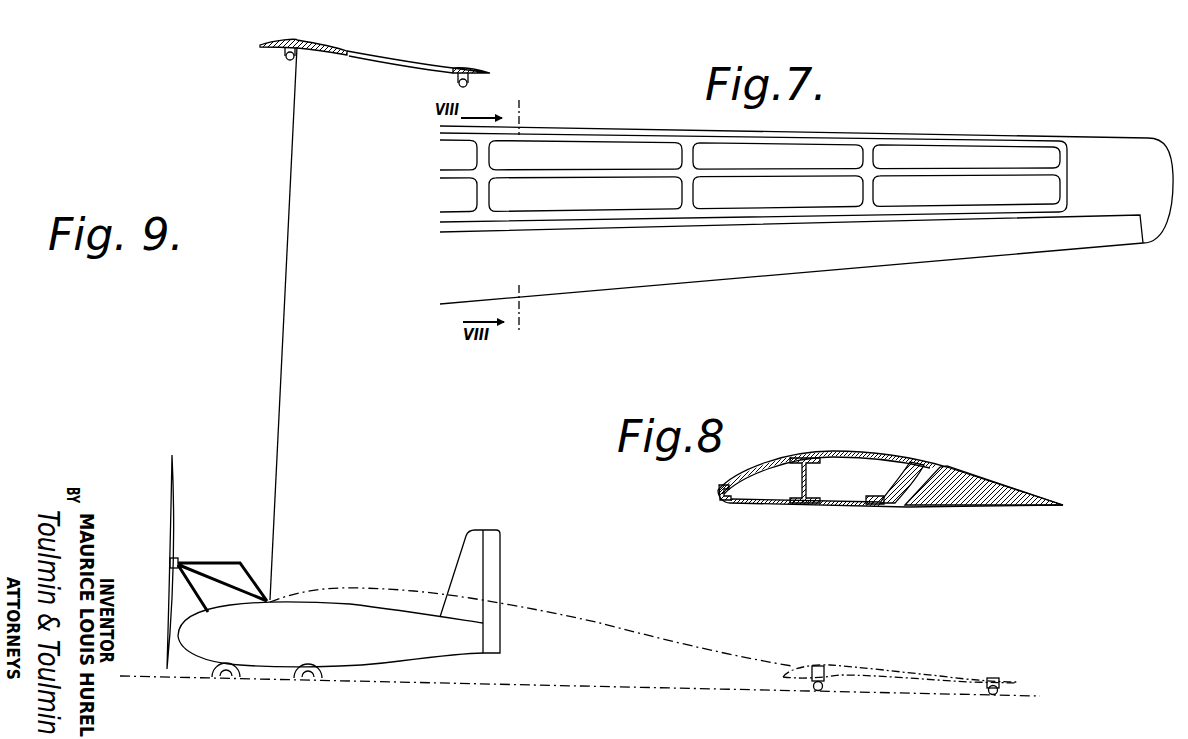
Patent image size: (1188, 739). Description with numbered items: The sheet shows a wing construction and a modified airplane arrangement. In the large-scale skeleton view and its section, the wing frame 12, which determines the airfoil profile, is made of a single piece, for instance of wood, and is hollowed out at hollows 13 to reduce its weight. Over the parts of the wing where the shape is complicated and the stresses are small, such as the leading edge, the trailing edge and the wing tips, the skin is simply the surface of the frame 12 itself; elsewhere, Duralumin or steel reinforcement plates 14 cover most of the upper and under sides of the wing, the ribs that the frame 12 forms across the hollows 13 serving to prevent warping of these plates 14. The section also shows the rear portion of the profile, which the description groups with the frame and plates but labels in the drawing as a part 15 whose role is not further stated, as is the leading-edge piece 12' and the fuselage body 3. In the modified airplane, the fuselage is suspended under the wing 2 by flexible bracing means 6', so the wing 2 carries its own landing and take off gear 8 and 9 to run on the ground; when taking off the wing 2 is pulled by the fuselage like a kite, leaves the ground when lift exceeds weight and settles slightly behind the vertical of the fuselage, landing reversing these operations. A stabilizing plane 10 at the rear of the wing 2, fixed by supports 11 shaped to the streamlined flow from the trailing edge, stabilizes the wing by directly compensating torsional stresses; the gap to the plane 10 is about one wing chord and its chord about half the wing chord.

In FIG. 9, the wing 2 is at (340, 50).
In FIG. 9, the airplane 3 is at (370, 622).
In FIG. 9, the flexible bracing means 6' is at (531, 356).
In FIG. 9, the landing and take off gear 8 is at (286, 60).
In FIG. 9, the landing and take off gear 9 is at (469, 87).
In FIG. 9, the stabilizing plane 10 is at (467, 68).
In FIG. 9, the supports 11 is at (408, 64).
In FIG. 7, the wing frame 12 is at (753, 164).
In FIG. 8, the wing frame 12 is at (820, 480).
In FIG. 8, the leading edge member 12' is at (693, 502).
In FIG. 7, the hollows 13 is at (790, 157).
In FIG. 8, the hollows 13 is at (860, 465).
In FIG. 8, the reinforcement plates 14 is at (773, 459).
In FIG. 7, the flap 15 is at (970, 243).
In FIG. 8, the flap 15 is at (1008, 488).